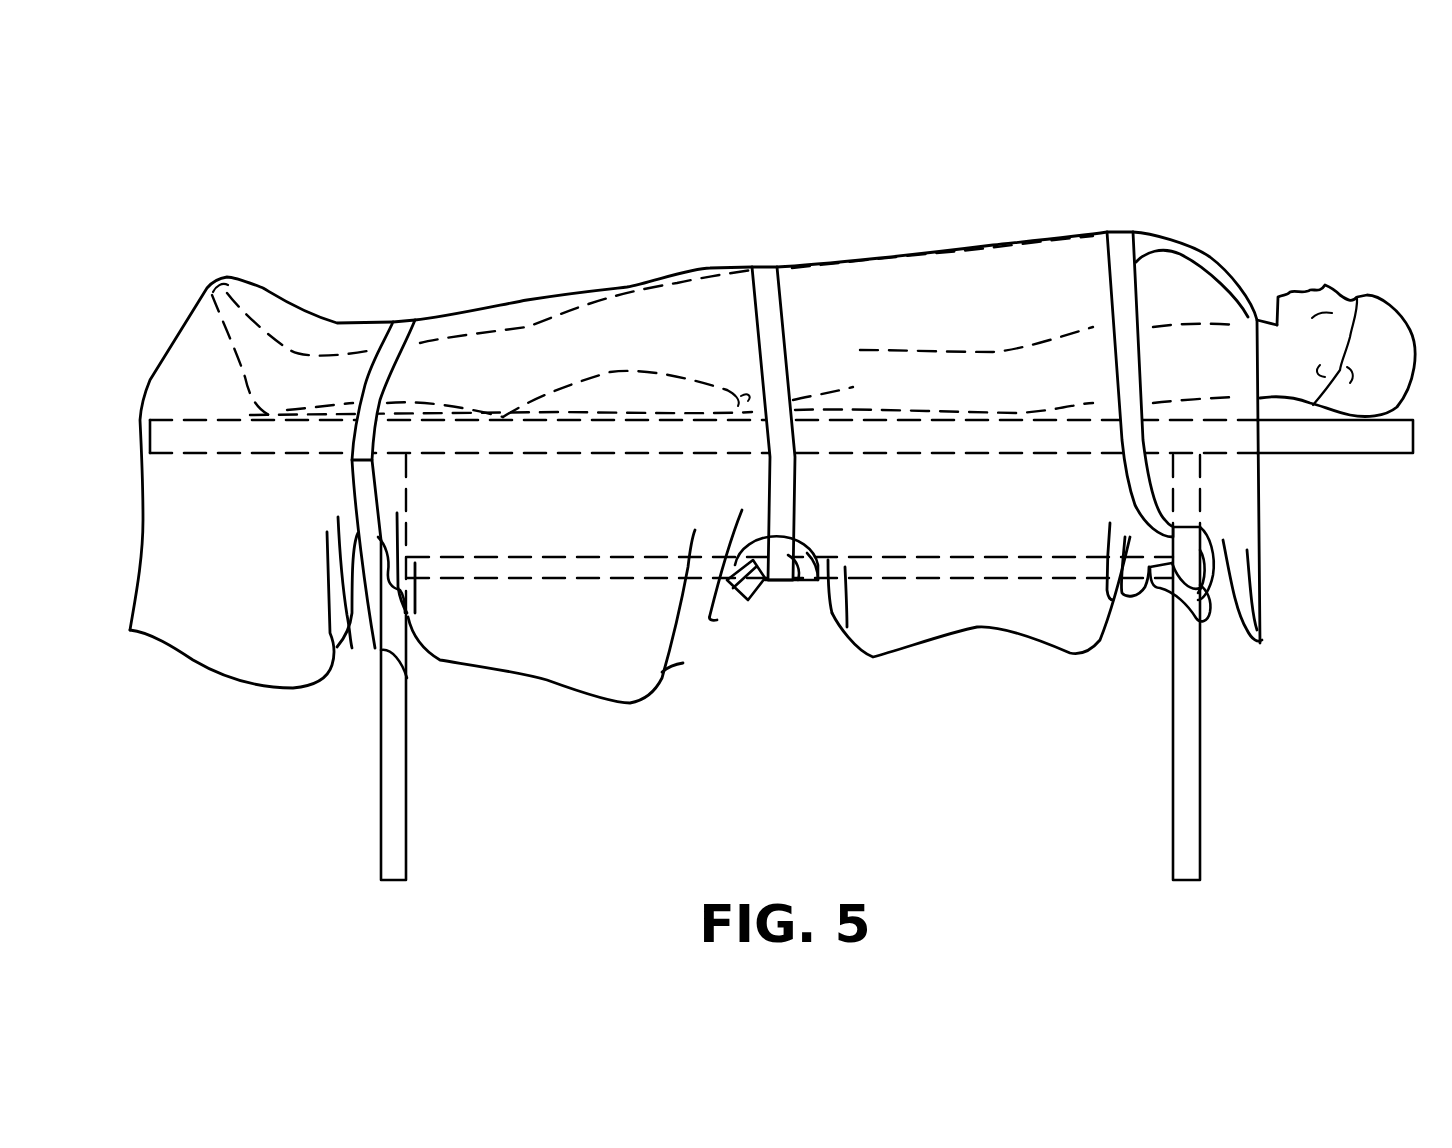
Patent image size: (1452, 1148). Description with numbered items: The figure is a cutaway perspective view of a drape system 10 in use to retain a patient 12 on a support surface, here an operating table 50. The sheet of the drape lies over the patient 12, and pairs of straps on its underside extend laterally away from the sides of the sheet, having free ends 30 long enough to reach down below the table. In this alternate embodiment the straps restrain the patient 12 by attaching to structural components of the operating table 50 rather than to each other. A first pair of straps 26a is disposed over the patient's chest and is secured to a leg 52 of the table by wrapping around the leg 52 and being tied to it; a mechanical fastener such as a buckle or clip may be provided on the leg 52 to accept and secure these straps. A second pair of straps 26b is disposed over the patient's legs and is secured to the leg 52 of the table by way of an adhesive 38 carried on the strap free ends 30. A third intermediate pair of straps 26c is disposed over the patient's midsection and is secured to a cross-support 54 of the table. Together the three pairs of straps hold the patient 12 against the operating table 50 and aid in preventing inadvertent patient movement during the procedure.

The patient positioning and covering system 10 is at (592, 178).
The patient 12 is at (1210, 288).
The first pair of straps 26a is at (1136, 262).
The second pair of straps 26b is at (353, 490).
The third intermediate pair of straps 26c is at (780, 284).
The free ends 30 is at (378, 667).
The adhesive 38 is at (407, 678).
The operating table 50 is at (1298, 437).
The leg 52 is at (400, 777).
The cross-support 54 is at (938, 557).